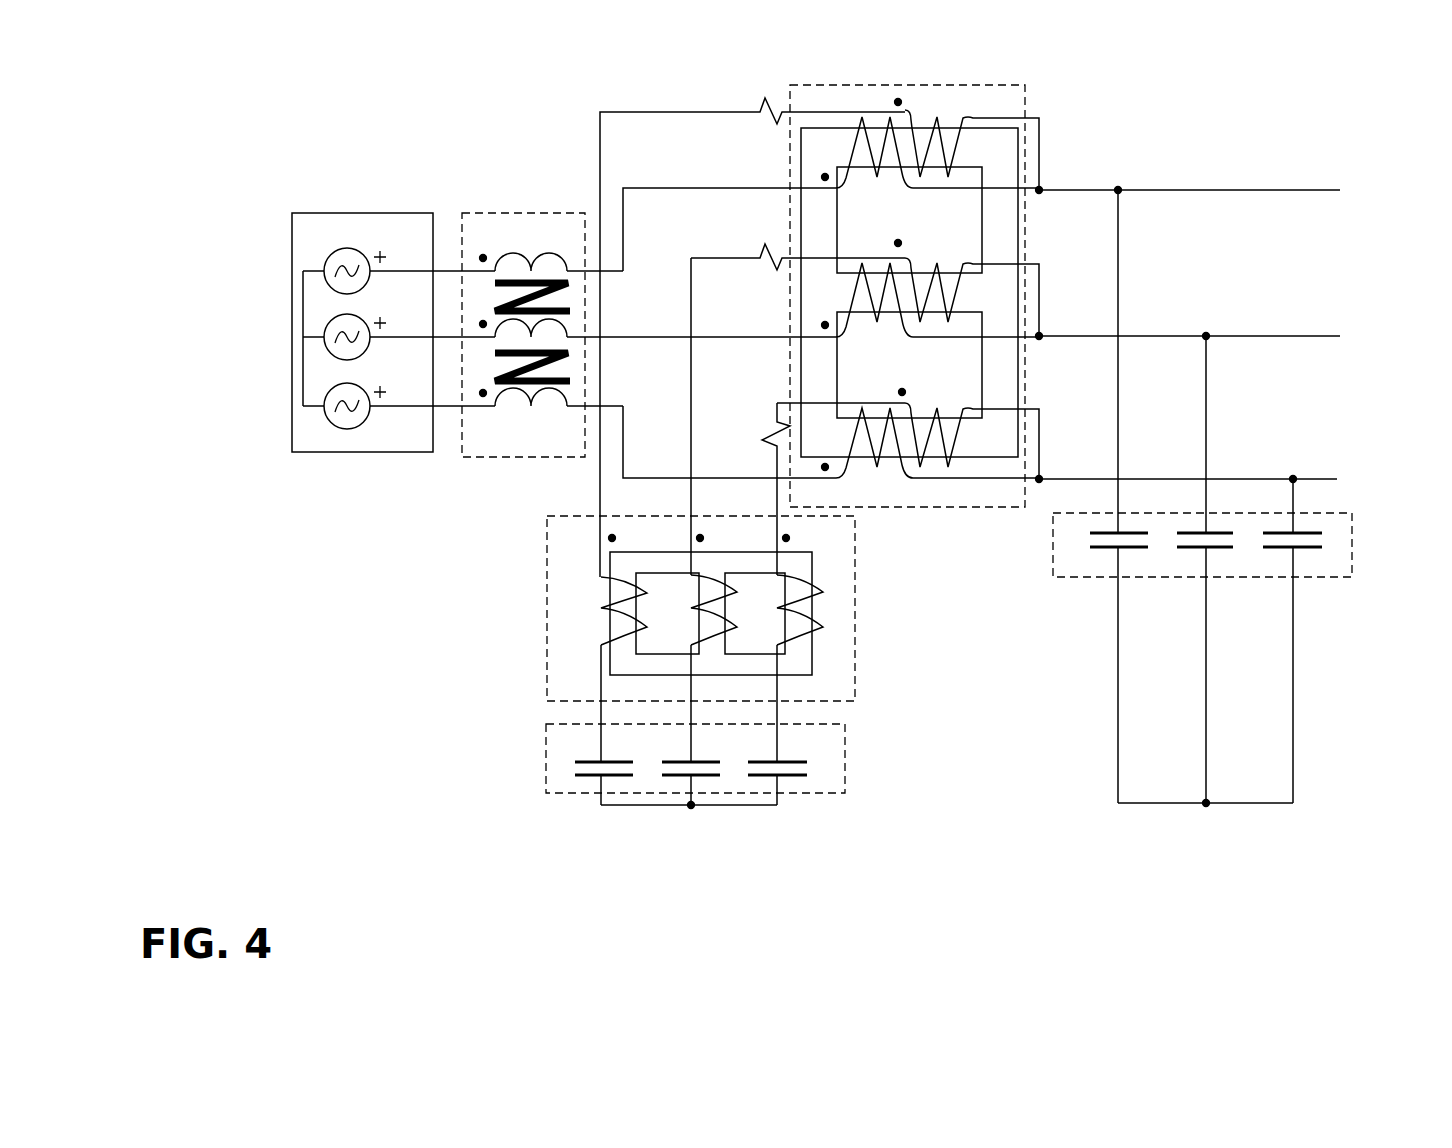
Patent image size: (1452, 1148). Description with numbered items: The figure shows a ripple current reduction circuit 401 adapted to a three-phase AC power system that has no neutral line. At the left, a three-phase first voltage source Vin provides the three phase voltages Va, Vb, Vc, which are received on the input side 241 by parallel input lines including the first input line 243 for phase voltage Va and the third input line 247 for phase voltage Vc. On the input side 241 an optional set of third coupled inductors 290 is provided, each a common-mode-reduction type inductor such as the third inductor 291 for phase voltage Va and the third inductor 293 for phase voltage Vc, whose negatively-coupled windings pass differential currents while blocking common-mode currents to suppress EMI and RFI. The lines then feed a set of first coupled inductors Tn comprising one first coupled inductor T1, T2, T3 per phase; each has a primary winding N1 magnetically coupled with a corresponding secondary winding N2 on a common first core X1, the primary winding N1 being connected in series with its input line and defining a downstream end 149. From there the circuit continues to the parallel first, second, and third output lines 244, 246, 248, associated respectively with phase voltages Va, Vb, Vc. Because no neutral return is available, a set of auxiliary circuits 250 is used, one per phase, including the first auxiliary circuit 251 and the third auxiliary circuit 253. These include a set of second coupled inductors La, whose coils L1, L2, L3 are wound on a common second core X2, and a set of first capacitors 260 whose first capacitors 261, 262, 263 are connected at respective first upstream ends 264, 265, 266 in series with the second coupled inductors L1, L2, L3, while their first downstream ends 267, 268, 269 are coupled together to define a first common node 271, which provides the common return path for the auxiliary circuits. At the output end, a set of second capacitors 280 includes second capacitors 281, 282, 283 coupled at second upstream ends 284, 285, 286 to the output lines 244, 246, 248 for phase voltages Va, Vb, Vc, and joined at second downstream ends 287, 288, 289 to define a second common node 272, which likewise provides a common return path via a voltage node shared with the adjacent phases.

The power conversion system 401 is at (450, 95).
The input side 241 is at (427, 155).
The first voltage source Vin is at (343, 212).
The set of third coupled inductors 290 is at (462, 223).
The third inductor 291 is at (527, 212).
The third inductor 293 is at (518, 430).
The first input line 243 is at (598, 187).
The third input line 247 is at (600, 468).
The third auxiliary circuit 253 is at (787, 500).
The set of first coupled inductors Tn is at (1025, 103).
The common first core X1 is at (827, 153).
The first coupled inductor T1 is at (953, 87).
The first coupled inductor T2 is at (978, 290).
The first coupled inductor T3 is at (938, 468).
The primary winding N1 is at (912, 108).
The secondary winding N2 is at (950, 118).
The downstream end 149 is at (1115, 158).
The first output line 244 is at (1303, 190).
The second output line 246 is at (1273, 336).
The third output line 248 is at (1300, 475).
The phase voltage Va is at (610, 245).
The phase voltage Vb is at (447, 375).
The phase voltage Vc is at (447, 417).
The set of second capacitors 280 is at (1352, 548).
The second capacitor 281 is at (1127, 548).
The second capacitor 282 is at (1227, 548).
The second capacitor 283 is at (1308, 550).
The second upstream end 284 is at (1142, 210).
The second upstream end 285 is at (1222, 363).
The second upstream end 286 is at (1303, 492).
The second downstream end 287 is at (1102, 587).
The second downstream end 288 is at (1195, 605).
The second downstream end 289 is at (1310, 588).
The second common node 272 is at (1205, 803).
The set of auxiliary circuits 250 is at (547, 600).
The first auxiliary circuit 251 is at (593, 550).
The set of second coupled inductors La is at (812, 640).
The common second core X2 is at (812, 660).
The second coupled inductor L1 is at (593, 598).
The second coupled inductor L2 is at (677, 542).
The second coupled inductor L3 is at (826, 600).
The set of first capacitors 260 is at (546, 752).
The first capacitor 261 is at (595, 760).
The first capacitor 262 is at (700, 760).
The first capacitor 263 is at (790, 776).
The first upstream end 264 is at (600, 718).
The first upstream end 265 is at (683, 740).
The first upstream end 266 is at (800, 748).
The first downstream end 267 is at (595, 800).
The first downstream end 268 is at (680, 782).
The first downstream end 269 is at (790, 805).
The first common node 271 is at (692, 805).